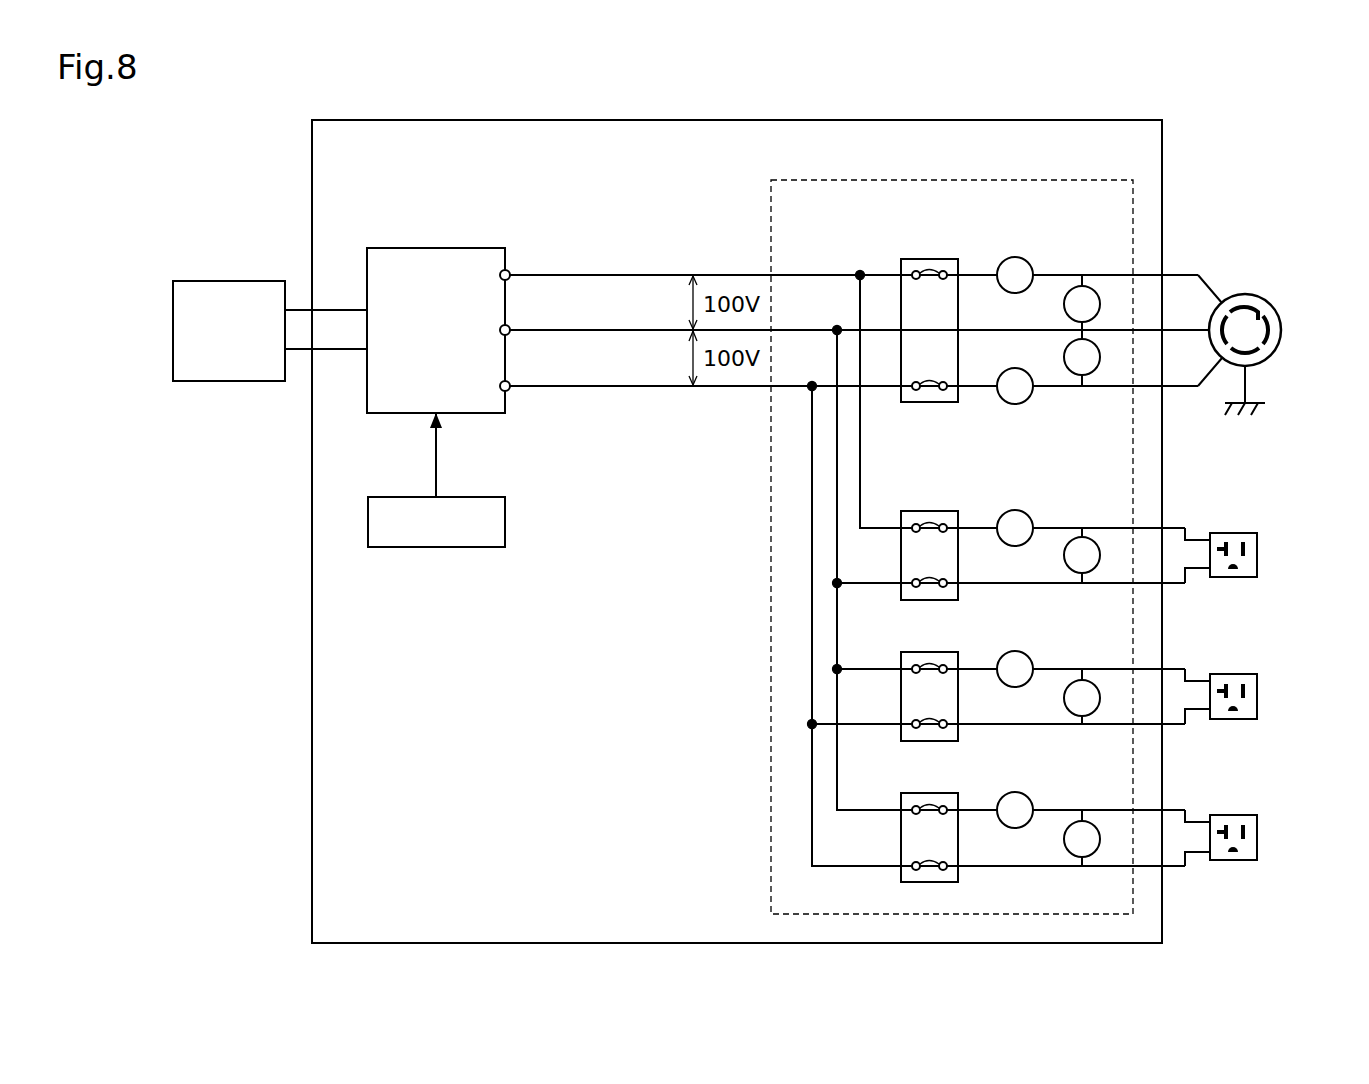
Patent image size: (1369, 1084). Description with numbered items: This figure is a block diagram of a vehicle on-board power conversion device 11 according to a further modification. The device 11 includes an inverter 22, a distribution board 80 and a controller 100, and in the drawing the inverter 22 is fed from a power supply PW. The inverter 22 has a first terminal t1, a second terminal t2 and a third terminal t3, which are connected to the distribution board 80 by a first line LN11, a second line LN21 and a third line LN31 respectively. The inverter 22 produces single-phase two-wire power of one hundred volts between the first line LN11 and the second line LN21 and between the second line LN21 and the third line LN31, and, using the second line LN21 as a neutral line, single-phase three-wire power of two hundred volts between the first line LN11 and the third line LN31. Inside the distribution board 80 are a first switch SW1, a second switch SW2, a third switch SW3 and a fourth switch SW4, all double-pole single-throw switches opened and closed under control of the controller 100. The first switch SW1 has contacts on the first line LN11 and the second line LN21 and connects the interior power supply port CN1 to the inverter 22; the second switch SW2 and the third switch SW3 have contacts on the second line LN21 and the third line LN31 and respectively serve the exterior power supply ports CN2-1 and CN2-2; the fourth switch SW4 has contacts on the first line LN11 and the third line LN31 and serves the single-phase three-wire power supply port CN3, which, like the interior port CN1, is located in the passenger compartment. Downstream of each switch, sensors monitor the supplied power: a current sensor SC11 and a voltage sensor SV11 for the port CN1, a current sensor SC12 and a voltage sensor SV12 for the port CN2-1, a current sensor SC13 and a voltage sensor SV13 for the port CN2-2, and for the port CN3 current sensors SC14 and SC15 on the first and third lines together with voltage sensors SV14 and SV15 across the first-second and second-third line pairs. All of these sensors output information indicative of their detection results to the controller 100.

The vehicle on-board power conversion device 11 is at (810, 120).
The distribution board 80 is at (1058, 180).
The inverter 22 is at (440, 248).
The controller 100 is at (455, 497).
The power supply PW is at (218, 281).
The first terminal t1 is at (511, 272).
The second terminal t2 is at (511, 327).
The third terminal t3 is at (511, 383).
The first line LN11 is at (585, 273).
The second line LN21 is at (585, 328).
The third line LN31 is at (585, 384).
The first switch SW1 is at (913, 511).
The second switch SW2 is at (913, 652).
The third switch SW3 is at (913, 793).
The fourth switch SW4 is at (913, 259).
The current sensor SC11 is at (1008, 510).
The current sensor SC12 is at (1008, 651).
The current sensor SC13 is at (1008, 792).
The current sensor SC14 is at (1008, 257).
The current sensor SC15 is at (1005, 403).
The voltage sensor SV11 is at (1092, 538).
The voltage sensor SV12 is at (1092, 681).
The voltage sensor SV13 is at (1092, 822).
The voltage sensor SV14 is at (1092, 287).
The voltage sensor SV15 is at (1092, 374).
The interior power supply port CN1 is at (1232, 522).
The exterior power supply port CN2-1 is at (1232, 663).
The exterior power supply port CN2-2 is at (1232, 804).
The single-phase three-wire power supply port CN3 is at (1272, 352).